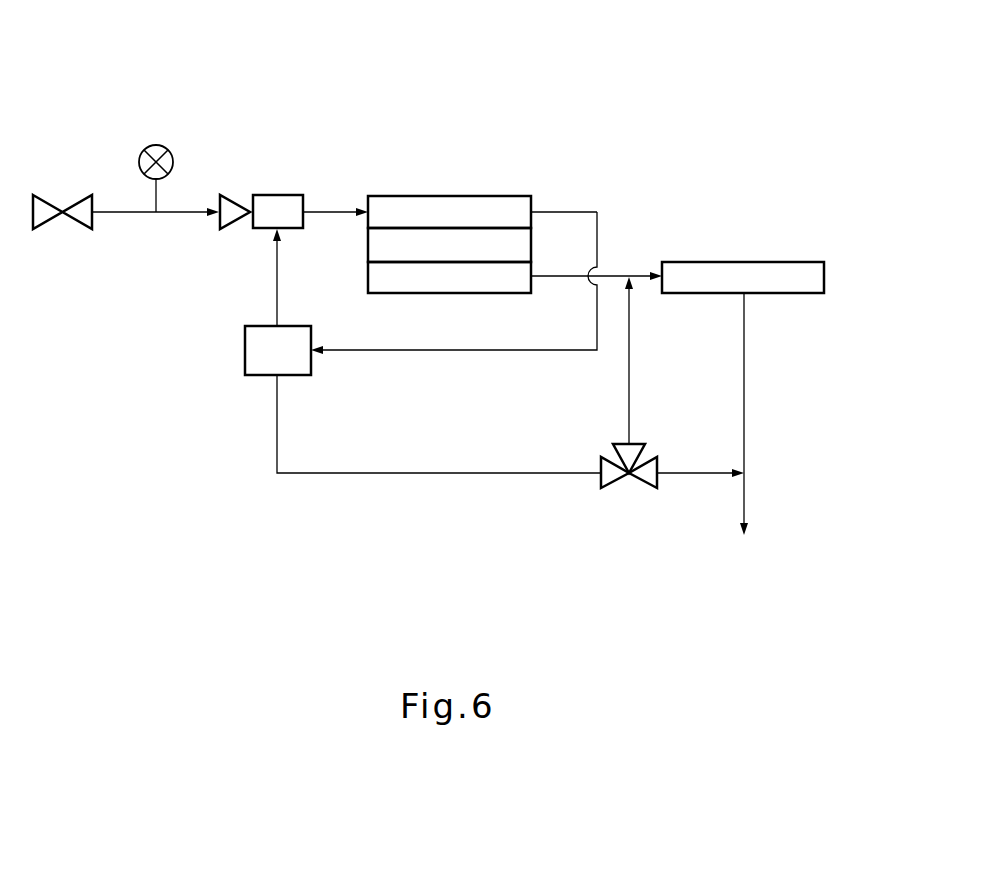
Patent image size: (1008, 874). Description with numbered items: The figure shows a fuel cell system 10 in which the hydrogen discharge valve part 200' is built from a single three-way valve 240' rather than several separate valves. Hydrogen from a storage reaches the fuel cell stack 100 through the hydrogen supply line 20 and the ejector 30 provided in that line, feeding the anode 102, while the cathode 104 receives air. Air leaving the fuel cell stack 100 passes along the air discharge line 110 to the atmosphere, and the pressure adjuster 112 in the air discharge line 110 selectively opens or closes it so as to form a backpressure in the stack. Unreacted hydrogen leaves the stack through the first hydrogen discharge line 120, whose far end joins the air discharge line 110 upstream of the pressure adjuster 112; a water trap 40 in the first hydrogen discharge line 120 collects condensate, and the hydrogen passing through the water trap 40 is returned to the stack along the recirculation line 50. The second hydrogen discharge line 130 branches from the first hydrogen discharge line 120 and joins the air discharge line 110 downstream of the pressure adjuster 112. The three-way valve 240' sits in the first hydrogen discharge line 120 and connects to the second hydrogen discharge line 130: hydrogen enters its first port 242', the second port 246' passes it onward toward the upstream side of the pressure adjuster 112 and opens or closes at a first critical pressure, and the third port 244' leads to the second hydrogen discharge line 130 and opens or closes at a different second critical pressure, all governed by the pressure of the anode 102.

The fuel cell system 10 is at (132, 36).
The hydrogen supply line 20 is at (188, 213).
The ejector 30 is at (277, 195).
The water trap 40 is at (245, 348).
The recirculation line 50 is at (277, 276).
The fuel cell stack 100 is at (419, 195).
The anode 102 is at (448, 196).
The cathode 104 is at (368, 274).
The air discharge line 110 is at (744, 375).
The pressure adjuster 112 is at (824, 277).
The first hydrogen discharge line 120 is at (629, 343).
The second hydrogen discharge line 130 is at (482, 473).
The hydrogen discharge valve part 200' is at (636, 479).
The three-way valve 240' is at (630, 464).
The first port 242' is at (579, 482).
The third port 244' is at (680, 482).
The second port 246' is at (645, 432).